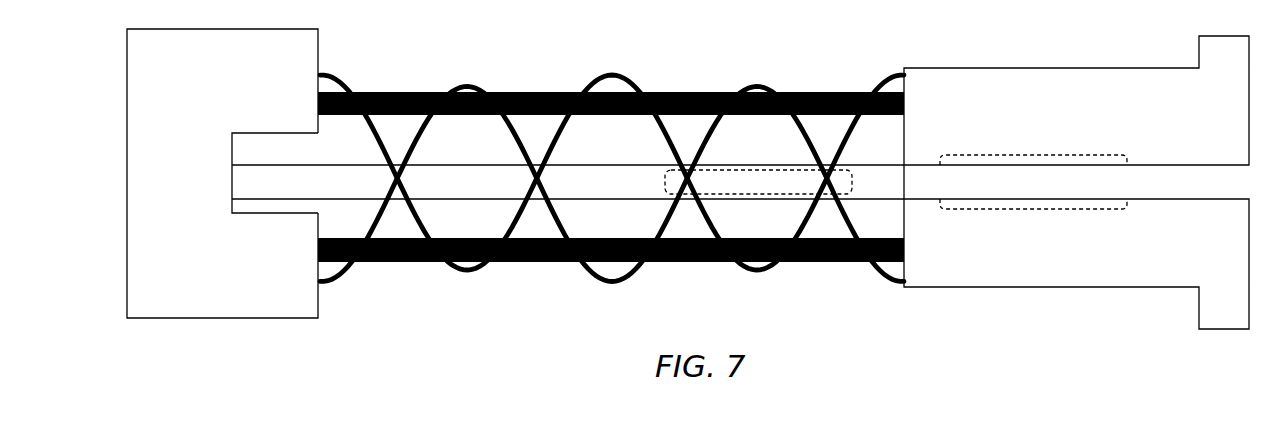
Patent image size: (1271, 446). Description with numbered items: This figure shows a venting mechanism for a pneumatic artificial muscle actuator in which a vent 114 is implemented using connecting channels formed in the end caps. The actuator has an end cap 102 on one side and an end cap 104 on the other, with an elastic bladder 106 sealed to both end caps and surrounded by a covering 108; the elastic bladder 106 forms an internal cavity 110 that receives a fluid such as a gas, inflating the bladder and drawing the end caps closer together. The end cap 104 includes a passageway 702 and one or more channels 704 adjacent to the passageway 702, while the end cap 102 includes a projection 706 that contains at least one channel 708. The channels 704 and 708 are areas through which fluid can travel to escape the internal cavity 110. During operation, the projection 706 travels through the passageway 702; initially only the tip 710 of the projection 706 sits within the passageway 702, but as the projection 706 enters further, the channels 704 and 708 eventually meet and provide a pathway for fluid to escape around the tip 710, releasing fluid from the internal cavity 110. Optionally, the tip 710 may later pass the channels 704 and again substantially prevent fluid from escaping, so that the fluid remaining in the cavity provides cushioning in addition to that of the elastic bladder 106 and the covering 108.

The end cap 102 is at (333, 329).
The end cap 104 is at (1050, 297).
The elastic bladder 106 is at (428, 84).
The covering 108 is at (611, 70).
The internal cavity 110 is at (625, 143).
The vent 114 is at (997, 128).
The passageway 702 is at (1217, 212).
The channels 704 is at (1108, 217).
The projection 706 is at (276, 148).
The channel 708 is at (737, 158).
The tip 710 is at (915, 201).